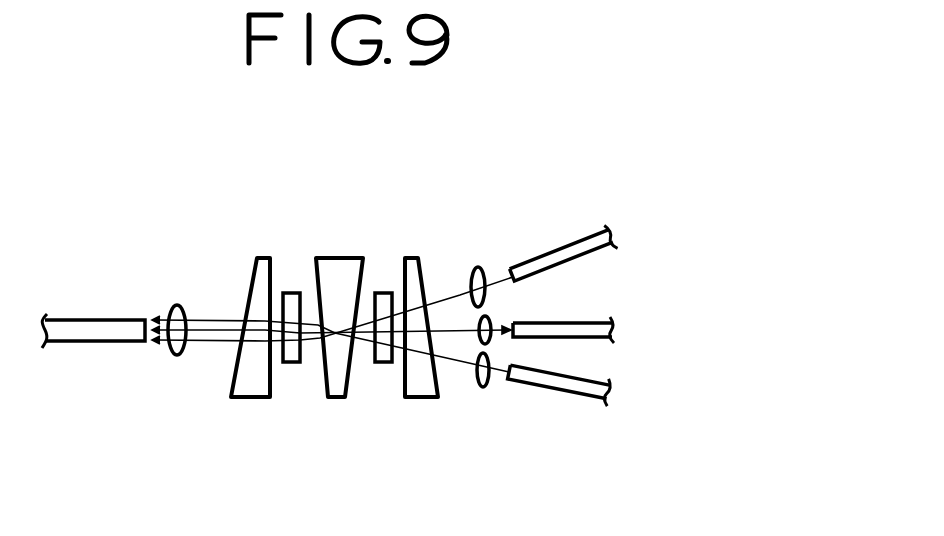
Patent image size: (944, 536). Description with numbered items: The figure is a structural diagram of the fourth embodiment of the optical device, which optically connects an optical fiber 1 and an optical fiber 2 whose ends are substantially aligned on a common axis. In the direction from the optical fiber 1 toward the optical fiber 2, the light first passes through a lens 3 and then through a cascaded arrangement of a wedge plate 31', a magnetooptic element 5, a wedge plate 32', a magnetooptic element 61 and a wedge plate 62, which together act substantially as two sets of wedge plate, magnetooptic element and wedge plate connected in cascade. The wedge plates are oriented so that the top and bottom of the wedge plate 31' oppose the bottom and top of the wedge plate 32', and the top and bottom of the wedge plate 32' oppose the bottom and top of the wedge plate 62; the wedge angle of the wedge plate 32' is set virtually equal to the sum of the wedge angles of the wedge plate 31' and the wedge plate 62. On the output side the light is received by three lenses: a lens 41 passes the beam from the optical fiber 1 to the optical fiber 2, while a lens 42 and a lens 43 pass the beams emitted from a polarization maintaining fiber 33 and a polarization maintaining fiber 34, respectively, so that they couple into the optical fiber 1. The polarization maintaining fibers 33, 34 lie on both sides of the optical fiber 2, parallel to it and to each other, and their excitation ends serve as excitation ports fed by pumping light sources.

The optical fiber 1 is at (87, 320).
The lens 3 is at (183, 306).
The wedge plate 31' is at (242, 366).
The magnetooptic element 5 is at (289, 364).
The wedge plate 32' is at (337, 370).
The magnetooptic element 61 is at (383, 364).
The wedge plate 62 is at (422, 399).
The lens 42 is at (478, 267).
The lens 41 is at (497, 316).
The lens 43 is at (487, 388).
The polarization maintaining fiber 33 is at (575, 242).
The optical fiber 2 is at (572, 323).
The polarization maintaining fiber 34 is at (578, 401).